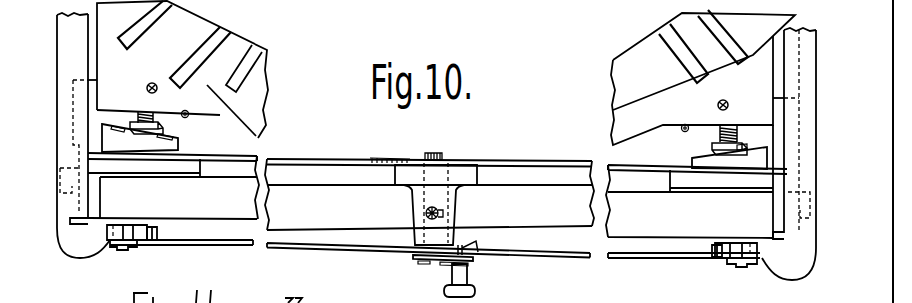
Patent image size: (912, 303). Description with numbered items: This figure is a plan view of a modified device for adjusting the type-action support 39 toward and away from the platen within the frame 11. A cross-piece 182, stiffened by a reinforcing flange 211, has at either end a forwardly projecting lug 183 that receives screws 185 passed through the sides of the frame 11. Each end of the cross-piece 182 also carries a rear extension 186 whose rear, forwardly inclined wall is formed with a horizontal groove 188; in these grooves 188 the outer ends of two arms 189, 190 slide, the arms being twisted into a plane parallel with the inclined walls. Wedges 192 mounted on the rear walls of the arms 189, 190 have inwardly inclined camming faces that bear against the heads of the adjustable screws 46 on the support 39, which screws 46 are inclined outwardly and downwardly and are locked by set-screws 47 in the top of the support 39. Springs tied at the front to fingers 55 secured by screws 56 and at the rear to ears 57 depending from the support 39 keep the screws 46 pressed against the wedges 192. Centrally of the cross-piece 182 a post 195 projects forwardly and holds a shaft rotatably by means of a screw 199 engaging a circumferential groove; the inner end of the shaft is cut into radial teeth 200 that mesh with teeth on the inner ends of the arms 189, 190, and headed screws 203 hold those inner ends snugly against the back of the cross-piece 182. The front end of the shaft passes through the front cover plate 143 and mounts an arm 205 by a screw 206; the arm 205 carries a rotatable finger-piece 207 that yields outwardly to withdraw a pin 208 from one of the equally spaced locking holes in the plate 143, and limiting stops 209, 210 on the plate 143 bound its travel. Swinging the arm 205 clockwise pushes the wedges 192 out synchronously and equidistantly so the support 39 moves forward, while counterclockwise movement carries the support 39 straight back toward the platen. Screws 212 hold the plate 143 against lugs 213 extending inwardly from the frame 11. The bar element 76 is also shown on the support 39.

The frame 11 is at (77, 259).
The type-action support 39 is at (237, 33).
The adjustable screws 46 is at (140, 111).
The set-screws 47 is at (152, 84).
The fingers 55 is at (143, 246).
The screws 56 is at (154, 236).
The ears 57 is at (188, 105).
The cross bar 76 is at (688, 70).
The front cover plate 143 is at (577, 258).
The cross-piece 182 is at (359, 186).
The forwardly projecting lug 183 is at (100, 200).
The screws 185 is at (56, 210).
The rear extension 186 is at (123, 157).
The horizontal grooves 188 is at (88, 147).
The arm 189 is at (248, 151).
The arm 190 is at (468, 161).
The wedges 192 is at (183, 133).
The post 195 is at (456, 215).
The screw 199 is at (426, 214).
The radial teeth 200 is at (447, 148).
The headed screws 203 is at (437, 163).
The arm 205 is at (419, 256).
The screw 206 is at (445, 265).
The rotatable finger-piece 207 is at (475, 292).
The pin 208 is at (462, 252).
The limiting stop 209 is at (360, 252).
The limiting stop 210 is at (503, 256).
The reinforcing flange 211 is at (243, 202).
The screws 212 is at (133, 252).
The lugs 213 is at (138, 226).